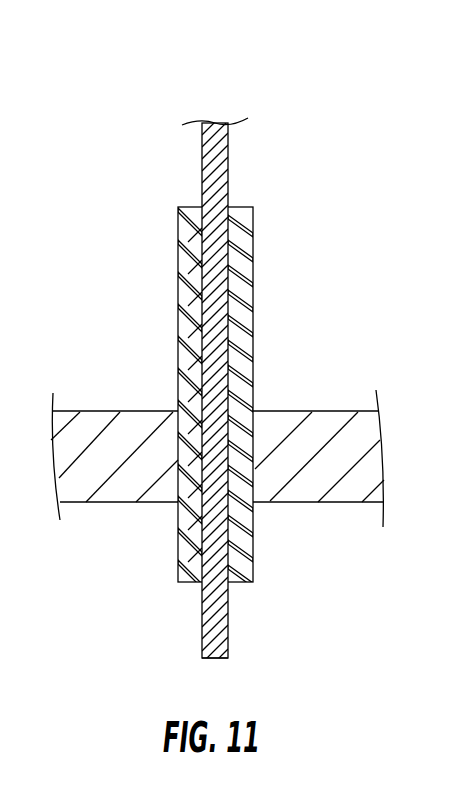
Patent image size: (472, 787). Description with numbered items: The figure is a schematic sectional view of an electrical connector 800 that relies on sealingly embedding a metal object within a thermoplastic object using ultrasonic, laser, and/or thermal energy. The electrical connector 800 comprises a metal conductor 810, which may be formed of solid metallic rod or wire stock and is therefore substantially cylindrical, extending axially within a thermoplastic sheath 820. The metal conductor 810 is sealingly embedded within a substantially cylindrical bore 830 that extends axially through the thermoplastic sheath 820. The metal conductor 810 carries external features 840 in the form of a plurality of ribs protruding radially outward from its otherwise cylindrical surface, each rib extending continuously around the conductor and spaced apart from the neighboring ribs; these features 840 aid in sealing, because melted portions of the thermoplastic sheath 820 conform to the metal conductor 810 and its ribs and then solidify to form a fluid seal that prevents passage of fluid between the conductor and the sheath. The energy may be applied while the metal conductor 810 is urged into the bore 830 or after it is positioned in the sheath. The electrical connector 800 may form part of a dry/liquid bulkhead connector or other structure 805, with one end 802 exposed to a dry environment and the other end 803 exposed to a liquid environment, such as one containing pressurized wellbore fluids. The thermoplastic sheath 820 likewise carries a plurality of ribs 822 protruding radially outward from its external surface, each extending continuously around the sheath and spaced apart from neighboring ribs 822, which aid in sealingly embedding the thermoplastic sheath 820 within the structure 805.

The electrical connector 800 is at (158, 84).
The one end 802 is at (165, 654).
The other end 803 is at (254, 168).
The structure 805 is at (74, 411).
The metal conductor 810 is at (232, 618).
The thermoplastic sheath 820 is at (177, 304).
The ribs 822 is at (172, 452).
The bore 830 is at (213, 552).
The external features 840 is at (178, 259).